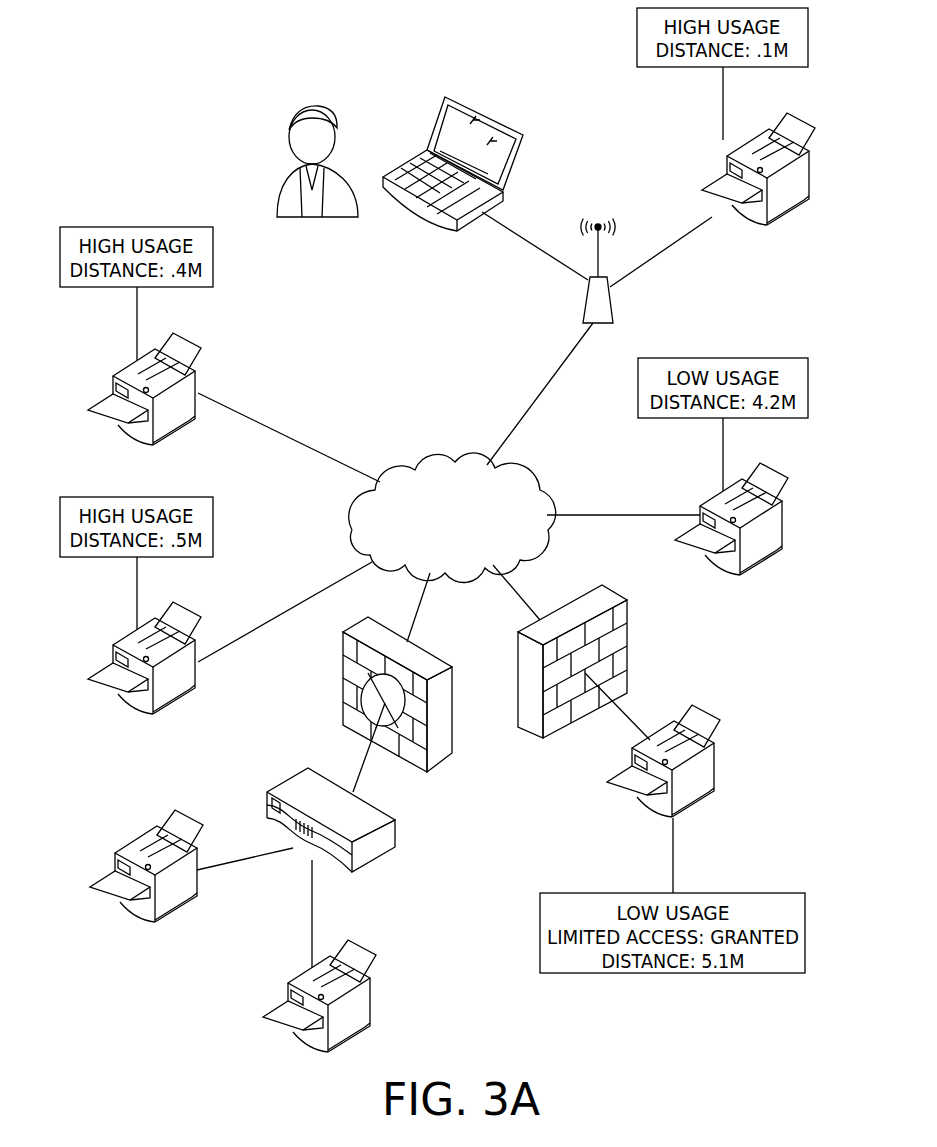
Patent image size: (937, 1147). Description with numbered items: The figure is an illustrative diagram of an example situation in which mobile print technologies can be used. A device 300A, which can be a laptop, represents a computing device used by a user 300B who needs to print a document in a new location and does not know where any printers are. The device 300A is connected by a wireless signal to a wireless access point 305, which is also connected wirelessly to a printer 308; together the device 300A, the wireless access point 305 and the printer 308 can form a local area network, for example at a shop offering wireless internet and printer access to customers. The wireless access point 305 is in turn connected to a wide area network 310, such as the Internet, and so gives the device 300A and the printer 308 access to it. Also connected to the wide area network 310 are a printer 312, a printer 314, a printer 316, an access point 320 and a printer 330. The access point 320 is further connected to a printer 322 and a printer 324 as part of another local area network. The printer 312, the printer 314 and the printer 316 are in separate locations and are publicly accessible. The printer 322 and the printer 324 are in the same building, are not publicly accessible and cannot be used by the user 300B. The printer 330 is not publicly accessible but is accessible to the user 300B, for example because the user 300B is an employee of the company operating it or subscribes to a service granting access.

The device 300A is at (433, 122).
The user 300B is at (312, 103).
The wireless access point 305 is at (613, 302).
The printer 308 is at (708, 147).
The wide area network 310 is at (445, 457).
The printer 312 is at (125, 368).
The printer 314 is at (127, 640).
The printer 316 is at (710, 497).
The access point 320 is at (395, 830).
The printer 322 is at (122, 842).
The printer 324 is at (298, 975).
The printer 330 is at (697, 807).